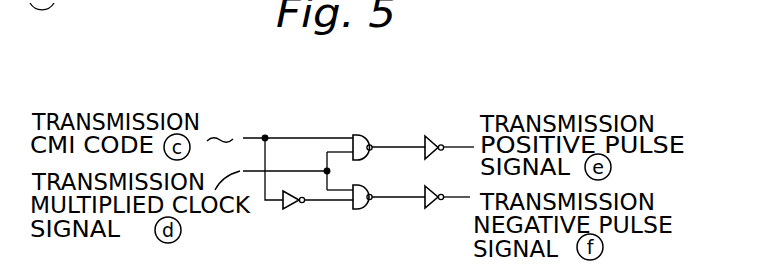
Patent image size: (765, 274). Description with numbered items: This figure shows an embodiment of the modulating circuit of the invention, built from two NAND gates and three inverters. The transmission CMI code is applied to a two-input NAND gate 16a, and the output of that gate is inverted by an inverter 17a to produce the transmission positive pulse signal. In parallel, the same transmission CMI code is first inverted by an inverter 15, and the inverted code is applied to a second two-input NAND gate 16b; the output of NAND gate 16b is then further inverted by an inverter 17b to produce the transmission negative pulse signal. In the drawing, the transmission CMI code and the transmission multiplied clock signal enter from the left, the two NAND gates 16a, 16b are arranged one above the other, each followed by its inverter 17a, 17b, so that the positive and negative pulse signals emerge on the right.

The inverter 15 is at (290, 210).
The 2-input NAND gate 16a is at (361, 135).
The 2-input NAND gate 16b is at (363, 209).
The inverter 17a is at (430, 134).
The inverter 17b is at (434, 208).